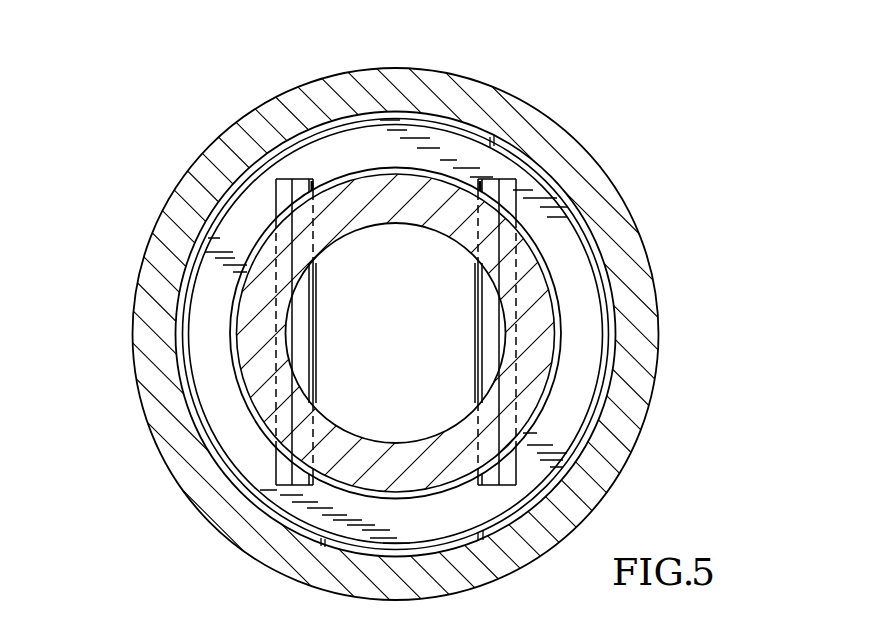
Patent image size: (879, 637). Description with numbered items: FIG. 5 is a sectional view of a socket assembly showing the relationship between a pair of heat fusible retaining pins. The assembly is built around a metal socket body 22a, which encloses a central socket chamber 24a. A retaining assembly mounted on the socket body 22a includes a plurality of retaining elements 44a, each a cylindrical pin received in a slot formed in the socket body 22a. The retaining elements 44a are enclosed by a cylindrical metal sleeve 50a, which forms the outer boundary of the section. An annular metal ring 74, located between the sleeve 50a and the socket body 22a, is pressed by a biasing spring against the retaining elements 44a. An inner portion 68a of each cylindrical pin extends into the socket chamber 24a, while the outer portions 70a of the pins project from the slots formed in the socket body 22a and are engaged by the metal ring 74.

The cylindrical metal sleeve 50a is at (306, 80).
The annular metal ring 74 is at (312, 152).
The socket body 22a is at (423, 200).
The socket chamber 24a is at (410, 302).
The outer portions 70a is at (285, 193).
The retaining elements 44a is at (291, 335).
The inner portion 68a is at (303, 320).